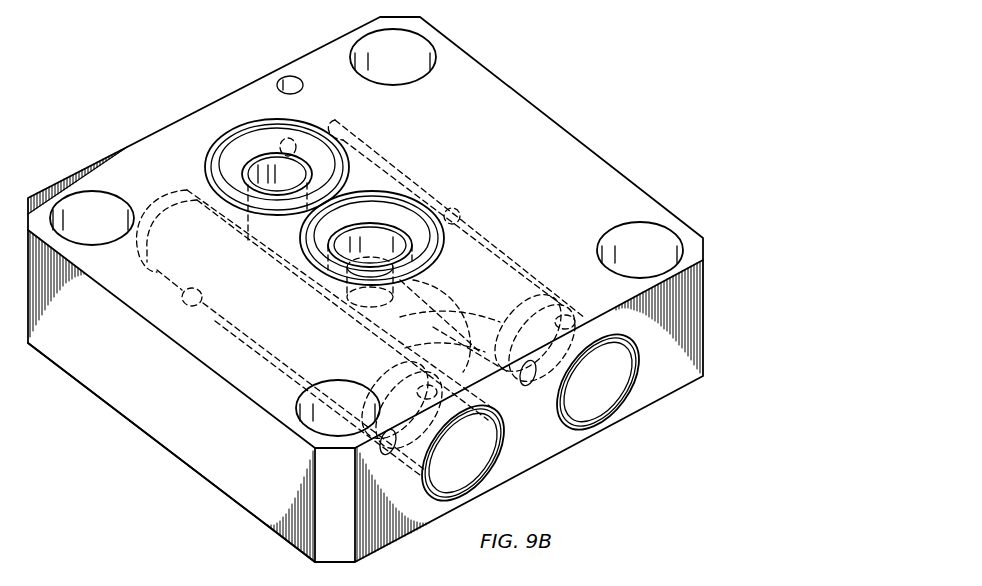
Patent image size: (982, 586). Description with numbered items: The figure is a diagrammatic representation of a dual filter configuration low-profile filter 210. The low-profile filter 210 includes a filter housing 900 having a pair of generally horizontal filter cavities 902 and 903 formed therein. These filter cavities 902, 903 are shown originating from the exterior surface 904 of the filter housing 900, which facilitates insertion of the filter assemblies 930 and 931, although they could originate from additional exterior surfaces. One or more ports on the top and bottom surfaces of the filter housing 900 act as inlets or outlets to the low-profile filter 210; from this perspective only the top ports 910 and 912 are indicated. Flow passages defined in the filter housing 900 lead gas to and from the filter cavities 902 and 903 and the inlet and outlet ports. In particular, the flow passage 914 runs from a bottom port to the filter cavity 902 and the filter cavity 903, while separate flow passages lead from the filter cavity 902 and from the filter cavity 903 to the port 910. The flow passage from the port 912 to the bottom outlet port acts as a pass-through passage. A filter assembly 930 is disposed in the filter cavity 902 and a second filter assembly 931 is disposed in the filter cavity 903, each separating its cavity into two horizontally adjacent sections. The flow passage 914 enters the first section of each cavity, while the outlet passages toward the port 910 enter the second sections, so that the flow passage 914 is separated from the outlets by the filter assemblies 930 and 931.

The low-profile filter 210 is at (220, 66).
The filter housing 900 is at (505, 100).
The top port 912 is at (210, 153).
The top port 910 is at (390, 184).
The filter cavity 902 is at (454, 212).
The filter assembly 930 is at (502, 258).
The filter cavity 903 is at (200, 313).
The filter assembly 931 is at (250, 345).
The flow passage 914 is at (493, 392).
The surface 904 is at (228, 481).